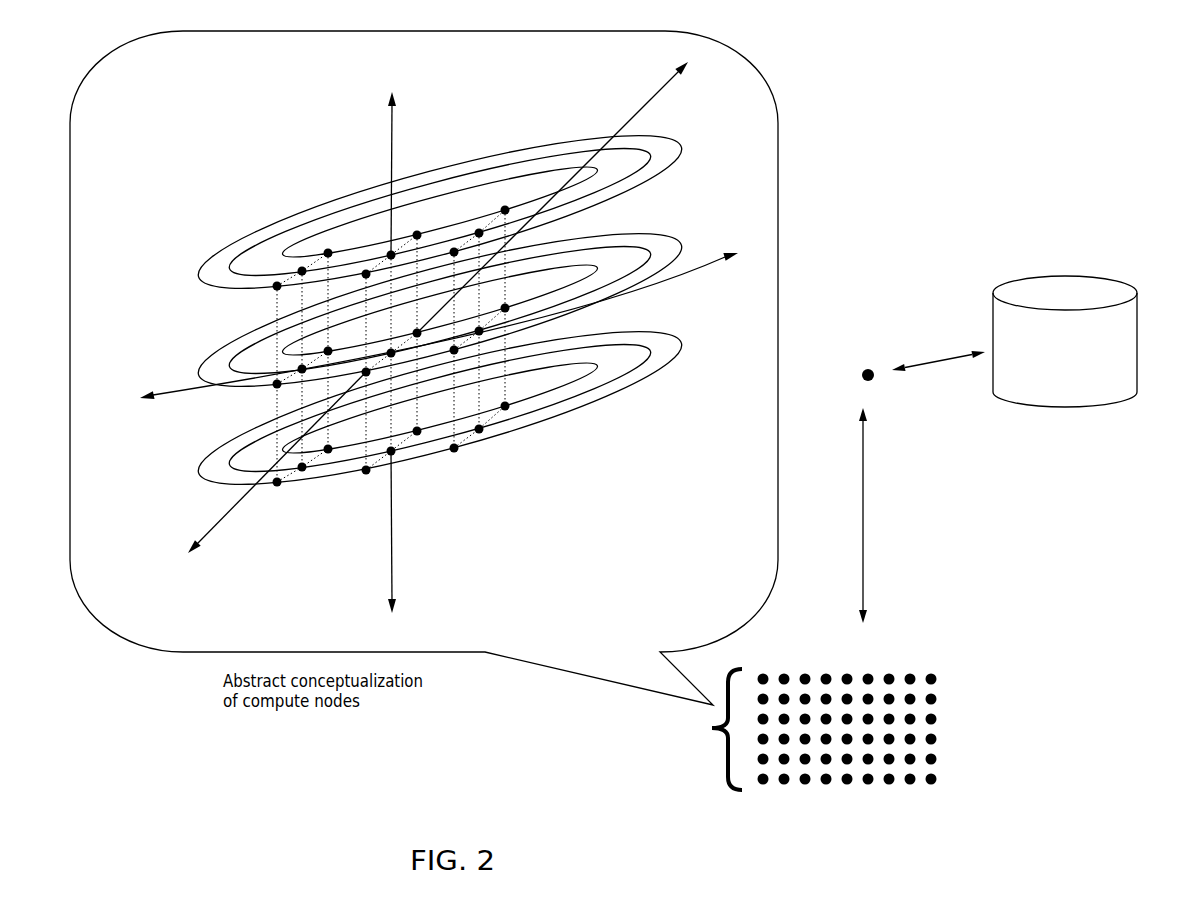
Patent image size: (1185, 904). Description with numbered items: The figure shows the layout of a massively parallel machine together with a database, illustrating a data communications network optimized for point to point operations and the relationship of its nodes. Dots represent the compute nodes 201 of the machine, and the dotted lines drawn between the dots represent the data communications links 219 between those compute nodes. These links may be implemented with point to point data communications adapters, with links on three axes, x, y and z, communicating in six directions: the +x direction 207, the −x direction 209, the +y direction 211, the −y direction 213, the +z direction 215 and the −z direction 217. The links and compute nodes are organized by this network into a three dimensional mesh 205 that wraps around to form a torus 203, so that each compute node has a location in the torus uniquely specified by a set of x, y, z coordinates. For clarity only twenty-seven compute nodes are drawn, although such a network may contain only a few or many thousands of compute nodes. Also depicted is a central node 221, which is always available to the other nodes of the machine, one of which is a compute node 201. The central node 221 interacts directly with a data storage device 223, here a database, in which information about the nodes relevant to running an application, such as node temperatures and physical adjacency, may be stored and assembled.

The compute nodes 201 is at (826, 784).
The torus 203 is at (260, 212).
The three dimensional mesh 205 is at (503, 207).
The +x direction 207 is at (460, 319).
The −x direction 209 is at (118, 418).
The +y direction 211 is at (569, 190).
The −y direction 213 is at (264, 472).
The +z direction 215 is at (390, 151).
The −z direction 217 is at (413, 547).
The data communications links 219 is at (278, 408).
The central node 221 is at (862, 375).
The data storage device 223 is at (1065, 389).